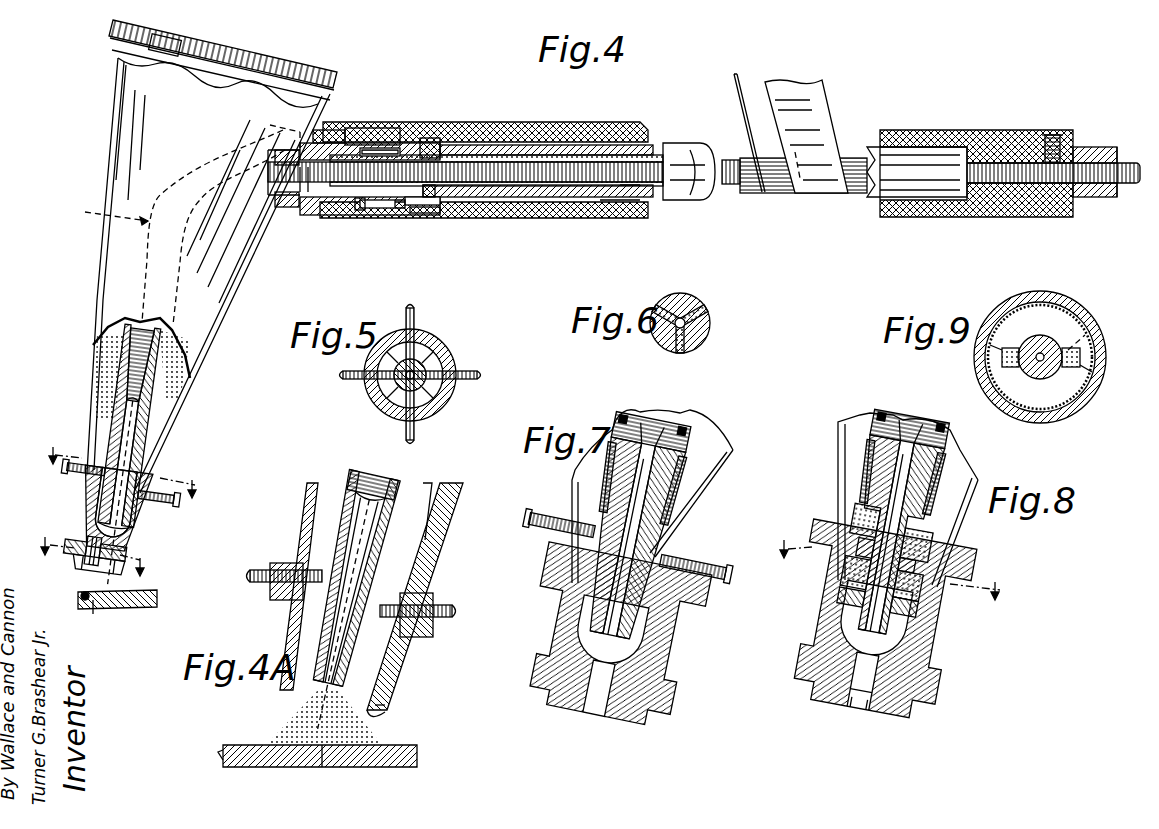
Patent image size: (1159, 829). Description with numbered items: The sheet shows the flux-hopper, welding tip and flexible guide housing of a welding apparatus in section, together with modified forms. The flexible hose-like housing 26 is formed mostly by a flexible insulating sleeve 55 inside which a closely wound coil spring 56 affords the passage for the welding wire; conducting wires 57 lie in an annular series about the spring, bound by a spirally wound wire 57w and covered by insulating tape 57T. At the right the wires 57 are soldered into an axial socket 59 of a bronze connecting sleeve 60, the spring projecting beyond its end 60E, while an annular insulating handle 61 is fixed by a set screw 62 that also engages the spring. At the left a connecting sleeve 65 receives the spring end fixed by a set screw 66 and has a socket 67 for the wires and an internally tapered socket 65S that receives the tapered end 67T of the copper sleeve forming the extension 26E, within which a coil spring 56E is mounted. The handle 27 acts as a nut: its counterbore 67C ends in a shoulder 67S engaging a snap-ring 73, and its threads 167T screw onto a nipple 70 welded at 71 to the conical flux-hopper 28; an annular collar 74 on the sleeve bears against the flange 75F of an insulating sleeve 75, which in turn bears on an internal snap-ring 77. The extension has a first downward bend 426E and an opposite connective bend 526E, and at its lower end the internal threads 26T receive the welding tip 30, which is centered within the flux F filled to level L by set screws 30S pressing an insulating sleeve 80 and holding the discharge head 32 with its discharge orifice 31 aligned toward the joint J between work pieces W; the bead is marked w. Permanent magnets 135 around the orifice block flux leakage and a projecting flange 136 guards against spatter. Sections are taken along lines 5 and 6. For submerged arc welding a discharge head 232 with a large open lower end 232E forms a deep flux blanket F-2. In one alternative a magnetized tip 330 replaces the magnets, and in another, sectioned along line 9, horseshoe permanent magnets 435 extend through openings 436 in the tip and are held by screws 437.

In FIG. 4, the conical flux-hopper 28 is at (121, 108).
In FIG. 4A, the conical flux-hopper 28 is at (457, 530).
In FIG. 7, the conical flux-hopper 28 is at (731, 464).
In FIG. 8, the conical flux-hopper 28 is at (840, 456).
In FIG. 4, the first downward bend 426E is at (201, 172).
In FIG. 4, the connective bend 526E is at (229, 237).
In FIG. 4, the extension 26E is at (98, 213).
In FIG. 4, the handle 27 is at (500, 129).
In FIG. 4, the set screw 66 is at (432, 146).
In FIG. 4, the connecting sleeve 65 is at (425, 200).
In FIG. 4, the flexible sleeve 55 is at (655, 200).
In FIG. 4, the coil spring 56 is at (690, 193).
In FIG. 4, the flexible hose-like housing 26 is at (688, 143).
In FIG. 4, the annular flange 75F is at (318, 130).
In FIG. 4, the annular collar 74 is at (340, 140).
In FIG. 4, the insulating sleeve 75 is at (372, 145).
In FIG. 4, the coil spring 56E is at (395, 147).
In FIG. 4, the snap-ring 73 is at (425, 140).
In FIG. 4, the internal snap-ring 77 is at (305, 135).
In FIG. 4, the metallic sleeve 67 is at (292, 208).
In FIG. 4, the tapered end 67T is at (350, 213).
In FIG. 4, the threaded nipple 70 is at (308, 208).
In FIG. 4, the weld 71 is at (280, 210).
In FIG. 4, the tapered socket 65S is at (370, 215).
In FIG. 4, the internal screw threads 167T is at (400, 215).
In FIG. 4, the counterbore 67C is at (418, 215).
In FIG. 4, the shoulder 67S is at (422, 215).
In FIG. 4, the wires 57 is at (600, 201).
In FIG. 4, the wire 57w is at (742, 78).
In FIG. 4, the insulating tape 57T is at (808, 176).
In FIG. 4, the axial socket 59 is at (975, 196).
In FIG. 4, the connecting sleeve 60 is at (1078, 146).
In FIG. 4, the annular insulating handle 61 is at (1055, 216).
In FIG. 4, the end of connecting sleeve 60E is at (1115, 198).
In FIG. 4, the set screw 62 is at (1052, 135).
In FIG. 4, the level L is at (94, 343).
In FIG. 4, the flux F is at (108, 378).
In FIG. 4, the internal screw threads 26T is at (140, 446).
In FIG. 4, the insulating sleeve 80 is at (160, 486).
In FIG. 4A, the insulating sleeve 80 is at (392, 592).
In FIG. 5, the insulating sleeve 80 is at (390, 398).
In FIG. 7, the insulating sleeve 80 is at (602, 516).
In FIG. 4, the adjustable set screws 30S is at (58, 475).
In FIG. 4A, the adjustable set screws 30S is at (278, 572).
In FIG. 5, the adjustable set screws 30S is at (416, 315).
In FIG. 7, the adjustable set screws 30S is at (716, 556).
In FIG. 4, the discharge head 32 is at (134, 530).
In FIG. 6, the discharge head 32 is at (708, 337).
In FIG. 9, the discharge head 32 is at (1072, 305).
In FIG. 7, the discharge head 32 is at (650, 651).
In FIG. 8, the discharge head 32 is at (926, 656).
In FIG. 4, the welding tip 30 is at (134, 512).
In FIG. 4A, the welding tip 30 is at (312, 660).
In FIG. 5, the welding tip 30 is at (440, 400).
In FIG. 9, the welding tip 30 is at (1050, 380).
In FIG. 8, the welding tip 30 is at (852, 626).
In FIG. 4, the discharge orifice 31 is at (104, 548).
In FIG. 8, the discharge orifice 31 is at (852, 703).
In FIG. 4, the permanent magnets 135 is at (130, 555).
In FIG. 6, the permanent magnets 135 is at (700, 312).
In FIG. 4, the annular projecting flange 136 is at (128, 580).
In FIG. 4, the weld bead w is at (83, 592).
In FIG. 4, the work pieces W is at (158, 598).
In FIG. 4, the joint J is at (95, 611).
In FIG. 4, the section line 5— 5 is at (122, 471).
In FIG. 4, the section line 6— 6 is at (99, 549).
In FIG. 8, the section line 9— 9 is at (892, 560).
In FIG. 4A, the discharge head 232 is at (392, 682).
In FIG. 4A, the open lower end 232E is at (372, 720).
In FIG. 4A, the flux blanket F-2 is at (280, 732).
In FIG. 7, the welding tip 330 is at (587, 598).
In FIG. 9, the horseshoe permanent magnets 435 is at (1000, 360).
In FIG. 8, the horseshoe permanent magnets 435 is at (932, 566).
In FIG. 8, the openings 436 is at (852, 598).
In FIG. 9, the screws 437 is at (1096, 332).
In FIG. 8, the screws 437 is at (850, 568).